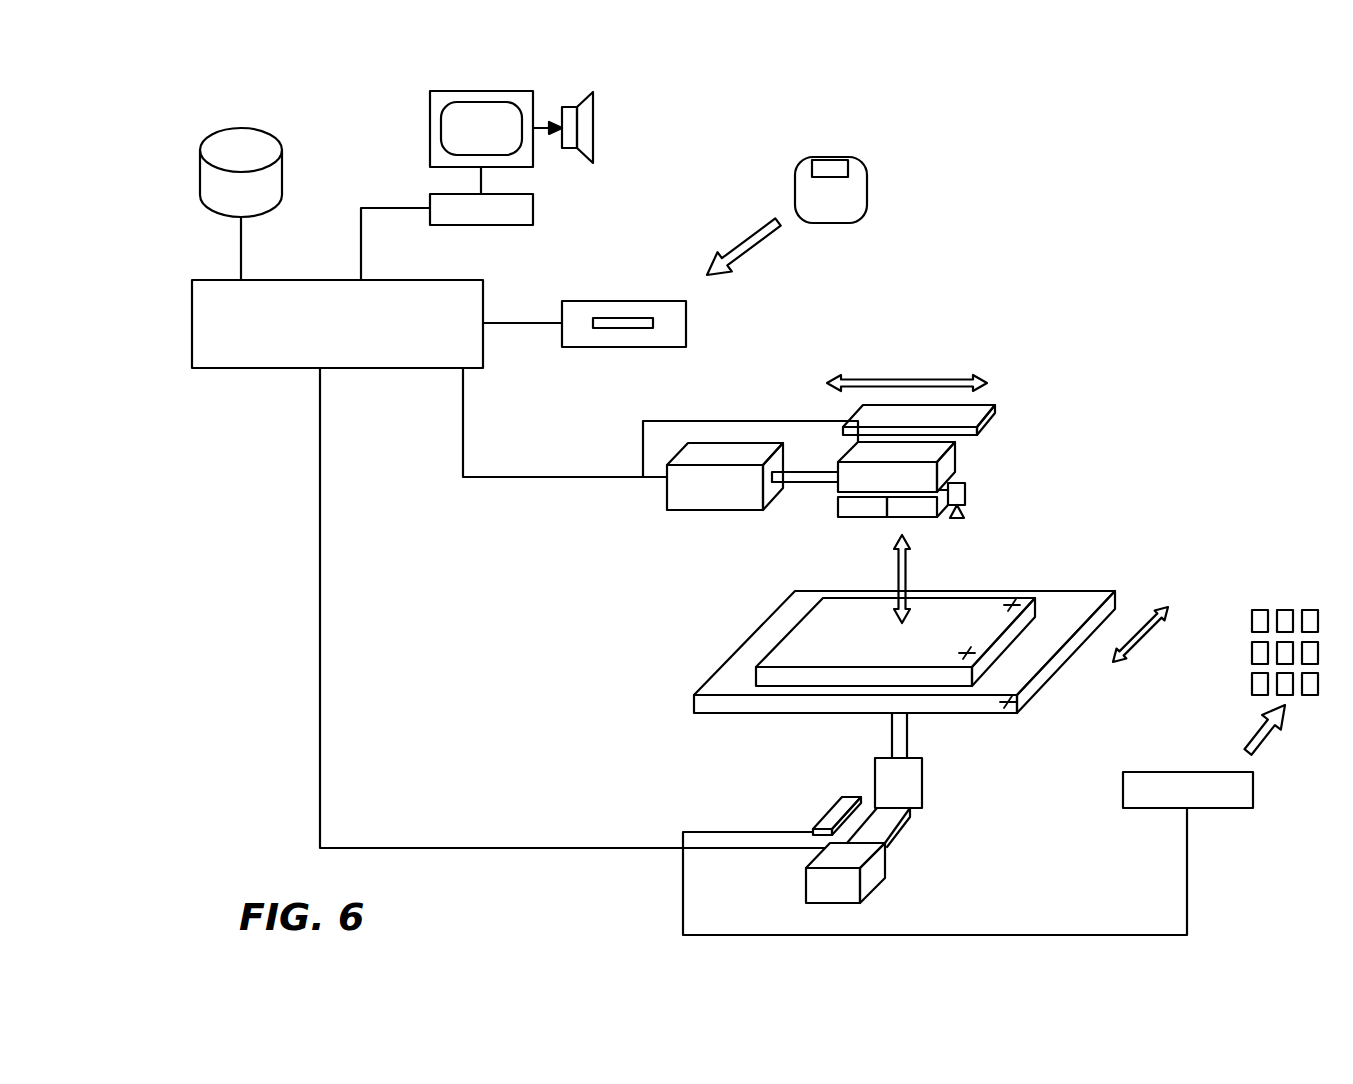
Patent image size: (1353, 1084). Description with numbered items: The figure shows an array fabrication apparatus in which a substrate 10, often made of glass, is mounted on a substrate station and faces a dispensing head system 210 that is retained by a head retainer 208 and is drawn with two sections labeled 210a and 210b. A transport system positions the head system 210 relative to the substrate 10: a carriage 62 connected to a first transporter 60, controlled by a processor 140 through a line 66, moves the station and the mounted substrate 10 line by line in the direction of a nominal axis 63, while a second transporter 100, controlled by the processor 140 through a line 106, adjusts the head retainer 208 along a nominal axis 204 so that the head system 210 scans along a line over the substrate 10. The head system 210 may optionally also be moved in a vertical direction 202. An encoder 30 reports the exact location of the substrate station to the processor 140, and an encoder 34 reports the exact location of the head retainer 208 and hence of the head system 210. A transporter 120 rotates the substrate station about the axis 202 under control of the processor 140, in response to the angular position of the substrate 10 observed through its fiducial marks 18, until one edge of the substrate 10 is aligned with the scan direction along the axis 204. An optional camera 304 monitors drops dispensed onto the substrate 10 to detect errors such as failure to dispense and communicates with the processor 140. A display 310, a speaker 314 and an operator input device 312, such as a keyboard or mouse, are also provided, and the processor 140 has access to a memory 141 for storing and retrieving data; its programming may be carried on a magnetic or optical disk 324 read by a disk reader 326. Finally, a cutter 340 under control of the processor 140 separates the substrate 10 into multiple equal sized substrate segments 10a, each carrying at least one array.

The substrate 10 is at (843, 607).
The substrate segments 10a is at (1310, 610).
The fiducial marks 18 is at (970, 656).
The encoder 30 is at (832, 803).
The encoder 34 is at (997, 420).
The first transporter 60 is at (865, 905).
The carriage 62 is at (905, 838).
The nominal axis 63 is at (1143, 641).
The line 66 is at (320, 525).
The second transporter 100 is at (667, 498).
The line 106 is at (567, 477).
The transporter 120 is at (922, 795).
The processor 140 is at (341, 335).
The memory 141 is at (217, 200).
The vertical direction 202 is at (907, 575).
The nominal axis 204 is at (905, 378).
The head retainer 208 is at (950, 468).
The dispensing head system 210 is at (861, 531).
The first sensor 210a is at (856, 517).
The second sensor 210b is at (912, 516).
The camera 304 is at (967, 498).
The display 310 is at (430, 125).
The operator input device 312 is at (533, 208).
The speaker 314 is at (597, 118).
The magnetic or optical disk 324 is at (843, 157).
The disk reader 326 is at (665, 301).
The cutter 340 is at (1225, 808).